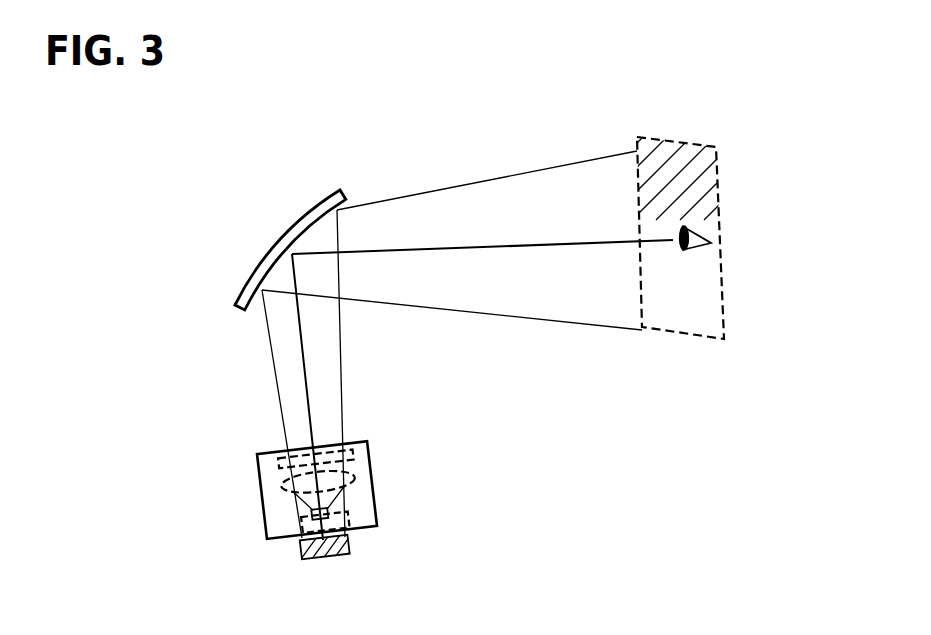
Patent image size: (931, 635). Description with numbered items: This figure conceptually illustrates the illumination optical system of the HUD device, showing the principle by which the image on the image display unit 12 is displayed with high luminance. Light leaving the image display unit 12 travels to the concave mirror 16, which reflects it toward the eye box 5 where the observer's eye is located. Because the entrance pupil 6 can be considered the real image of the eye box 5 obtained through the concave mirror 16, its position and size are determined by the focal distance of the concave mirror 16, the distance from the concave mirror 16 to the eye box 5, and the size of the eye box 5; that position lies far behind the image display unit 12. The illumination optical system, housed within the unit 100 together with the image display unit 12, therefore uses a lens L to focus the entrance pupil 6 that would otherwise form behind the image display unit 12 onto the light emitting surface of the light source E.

The concave mirror 16 is at (309, 211).
The eye box 5 is at (692, 141).
The image display device housing 100 is at (260, 476).
The image display unit 12 is at (278, 450).
The lens L is at (355, 479).
The light source E is at (348, 513).
The entrance pupil 6 is at (348, 545).